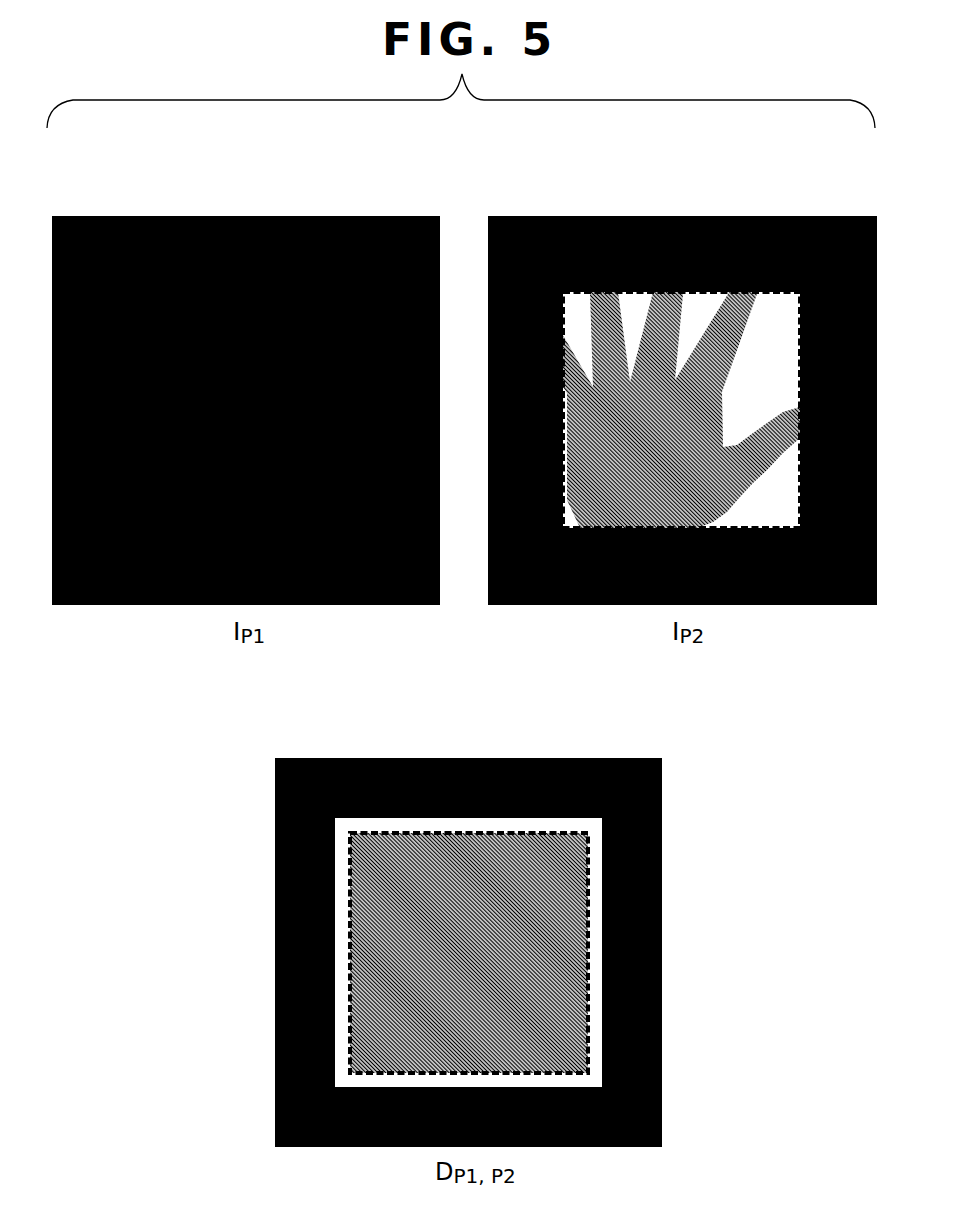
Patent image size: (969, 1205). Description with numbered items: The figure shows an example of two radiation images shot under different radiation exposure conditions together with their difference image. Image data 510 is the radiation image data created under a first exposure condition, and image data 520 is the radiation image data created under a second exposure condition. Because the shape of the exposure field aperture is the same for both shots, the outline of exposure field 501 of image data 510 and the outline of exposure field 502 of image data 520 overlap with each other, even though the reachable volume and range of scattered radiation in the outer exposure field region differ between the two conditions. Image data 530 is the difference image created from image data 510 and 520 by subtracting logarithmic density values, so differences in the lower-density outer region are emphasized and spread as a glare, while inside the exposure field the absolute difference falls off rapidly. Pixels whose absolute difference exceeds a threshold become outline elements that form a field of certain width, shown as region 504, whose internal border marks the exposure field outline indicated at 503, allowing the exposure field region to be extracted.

The image data 510 is at (77, 216).
The outline of exposure field 501 is at (284, 277).
The image data 520 is at (504, 216).
The outline of exposure field 502 is at (719, 268).
The image data 530 is at (298, 757).
The common region boundary 503 is at (593, 892).
The region 504 is at (603, 1023).